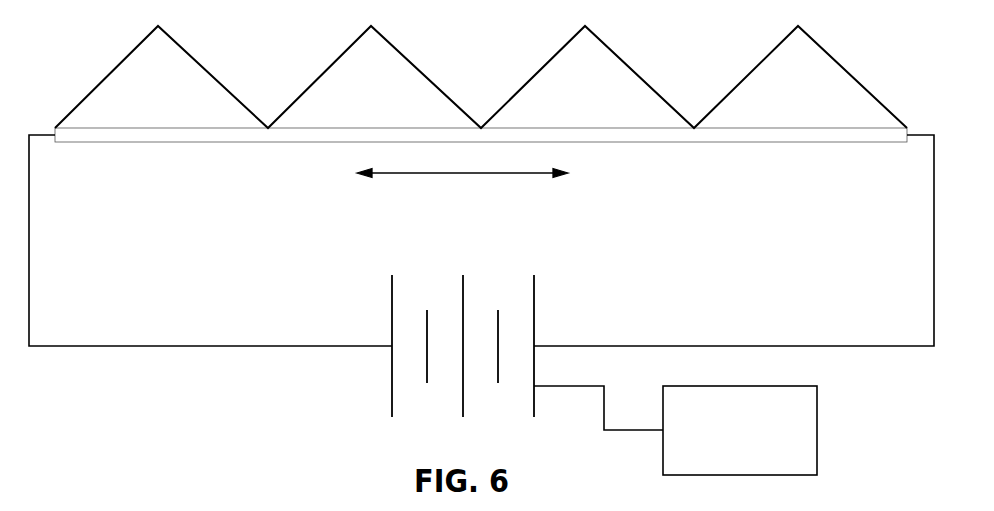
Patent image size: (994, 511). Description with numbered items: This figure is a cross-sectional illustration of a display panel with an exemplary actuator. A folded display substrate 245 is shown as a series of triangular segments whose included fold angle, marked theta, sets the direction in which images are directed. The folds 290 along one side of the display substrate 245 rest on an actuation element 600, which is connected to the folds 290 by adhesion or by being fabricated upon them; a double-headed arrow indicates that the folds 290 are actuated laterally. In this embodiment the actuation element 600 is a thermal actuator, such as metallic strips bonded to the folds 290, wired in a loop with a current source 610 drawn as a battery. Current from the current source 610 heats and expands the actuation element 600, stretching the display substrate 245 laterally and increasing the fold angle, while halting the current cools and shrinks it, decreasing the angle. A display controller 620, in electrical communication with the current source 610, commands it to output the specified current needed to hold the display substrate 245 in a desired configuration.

The display substrate 245 is at (353, 47).
The folds 290 is at (268, 130).
The actuation element 600 is at (162, 144).
The current source 610 is at (392, 396).
The display controller 620 is at (818, 392).